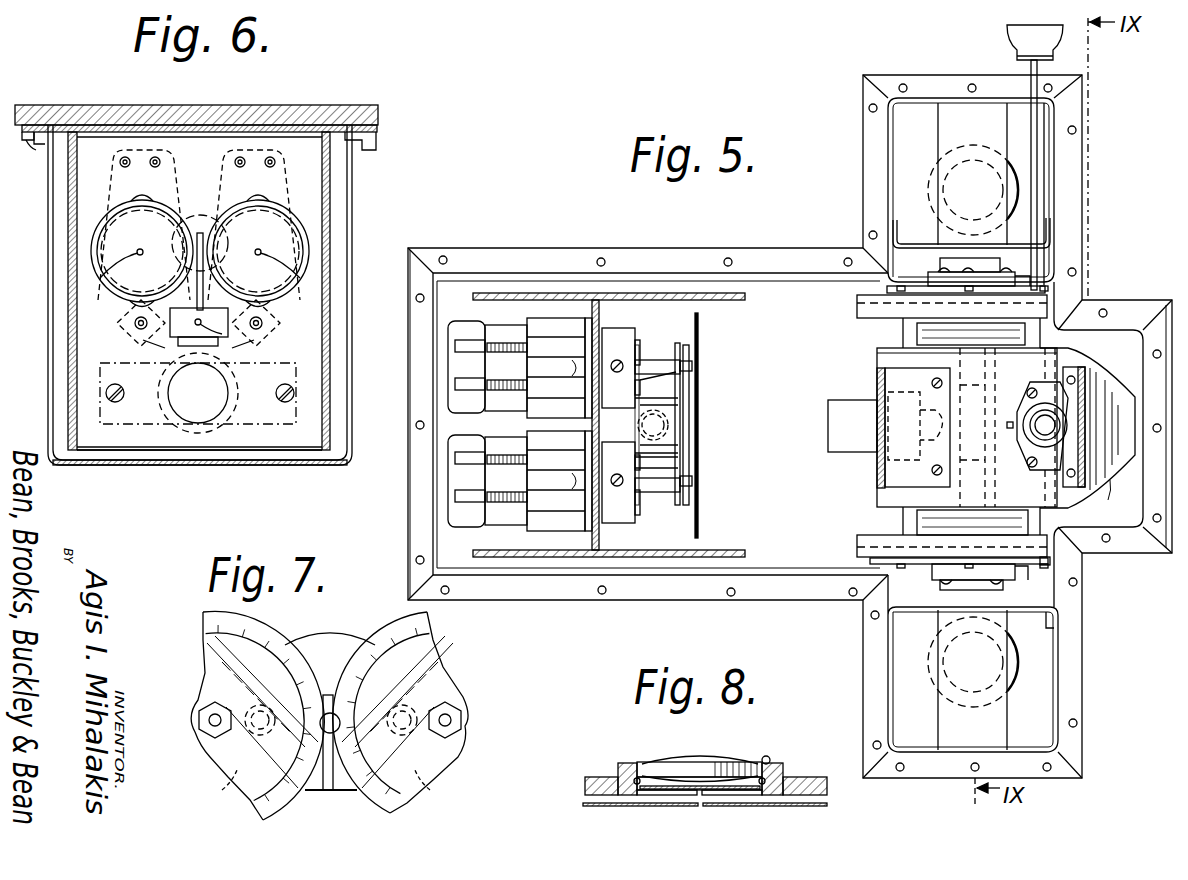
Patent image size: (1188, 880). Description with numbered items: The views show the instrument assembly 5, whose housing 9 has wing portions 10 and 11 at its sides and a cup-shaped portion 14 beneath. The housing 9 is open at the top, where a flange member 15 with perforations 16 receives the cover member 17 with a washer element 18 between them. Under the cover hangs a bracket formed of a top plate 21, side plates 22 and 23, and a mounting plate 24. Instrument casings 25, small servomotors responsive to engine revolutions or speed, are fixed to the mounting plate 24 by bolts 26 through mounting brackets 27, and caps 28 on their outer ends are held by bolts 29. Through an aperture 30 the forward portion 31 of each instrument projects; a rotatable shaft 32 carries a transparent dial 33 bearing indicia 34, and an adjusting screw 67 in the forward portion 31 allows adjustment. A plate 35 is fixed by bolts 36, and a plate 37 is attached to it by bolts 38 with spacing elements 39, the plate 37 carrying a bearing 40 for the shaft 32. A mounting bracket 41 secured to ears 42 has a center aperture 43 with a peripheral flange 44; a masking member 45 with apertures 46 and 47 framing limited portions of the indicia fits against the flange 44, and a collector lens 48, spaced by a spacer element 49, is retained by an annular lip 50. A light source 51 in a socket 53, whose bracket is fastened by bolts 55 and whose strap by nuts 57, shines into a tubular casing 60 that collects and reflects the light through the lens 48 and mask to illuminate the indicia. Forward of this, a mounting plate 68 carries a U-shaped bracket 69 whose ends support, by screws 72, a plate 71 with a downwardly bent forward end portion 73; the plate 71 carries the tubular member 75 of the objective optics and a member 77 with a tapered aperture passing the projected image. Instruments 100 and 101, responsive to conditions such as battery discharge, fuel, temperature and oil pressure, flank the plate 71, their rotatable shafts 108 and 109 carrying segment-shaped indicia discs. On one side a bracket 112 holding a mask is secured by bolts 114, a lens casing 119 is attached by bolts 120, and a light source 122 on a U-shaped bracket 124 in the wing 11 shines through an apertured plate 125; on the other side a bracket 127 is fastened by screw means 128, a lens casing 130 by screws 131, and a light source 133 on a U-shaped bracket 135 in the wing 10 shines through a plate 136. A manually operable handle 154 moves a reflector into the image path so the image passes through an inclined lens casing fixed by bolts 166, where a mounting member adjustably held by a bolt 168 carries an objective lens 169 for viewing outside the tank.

In FIG. 5, the instrument assembly 5 is at (405, 513).
In FIG. 6, the housing 9 is at (50, 432).
In FIG. 5, the winged-shaped portion 10 is at (858, 124).
In FIG. 5, the winged-shaped portion 11 is at (860, 692).
In FIG. 5, the cup-shaped portion 14 is at (1030, 578).
In FIG. 6, the flange member 15 is at (40, 140).
In FIG. 5, the flange member 15 is at (655, 262).
In FIG. 5, the perforations 16 is at (730, 262).
In FIG. 6, the cover member 17 is at (58, 110).
In FIG. 6, the washer element 18 is at (338, 125).
In FIG. 6, the top plate 21 is at (167, 130).
In FIG. 6, the side plate 22 is at (330, 347).
In FIG. 5, the side plate 22 is at (745, 297).
In FIG. 6, the side plate 23 is at (68, 338).
In FIG. 5, the side plate 23 is at (745, 552).
In FIG. 6, the mounting plate 24 is at (124, 452).
In FIG. 5, the mounting plate 24 is at (594, 300).
In FIG. 5, the instrument casing 25 is at (506, 425).
In FIG. 6, the bolts 26 is at (197, 172).
In FIG. 5, the bolts 26 is at (556, 424).
In FIG. 6, the mounting bracket 27 is at (115, 160).
In FIG. 5, the mounting bracket 27 is at (580, 330).
In FIG. 5, the cap 28 is at (466, 424).
In FIG. 5, the bolts 29 is at (505, 392).
In FIG. 5, the aperture 30 is at (592, 407).
In FIG. 5, the forward portion 31 is at (621, 425).
In FIG. 6, the rotatable shaft 32 is at (115, 295).
In FIG. 5, the rotatable shaft 32 is at (696, 360).
In FIG. 6, the transparent dial 33 is at (197, 328).
In FIG. 7, the transparent dial 33 is at (208, 673).
In FIG. 8, the transparent dial 33 is at (606, 807).
In FIG. 5, the transparent dial 33 is at (690, 402).
In FIG. 7, the indicia 34 is at (206, 618).
In FIG. 5, the plate 35 is at (640, 345).
In FIG. 5, the bolts 36 is at (680, 365).
In FIG. 7, the plate 37 is at (445, 796).
In FIG. 5, the plate 37 is at (676, 343).
In FIG. 5, the bolts 38 is at (614, 427).
In FIG. 5, the spacing elements 39 is at (655, 362).
In FIG. 7, the bearing 40 is at (198, 742).
In FIG. 5, the bearing 40 is at (692, 368).
In FIG. 6, the mounting bracket 41 is at (200, 215).
In FIG. 7, the mounting bracket 41 is at (319, 648).
In FIG. 8, the mounting bracket 41 is at (818, 777).
In FIG. 5, the mounting bracket 41 is at (672, 426).
In FIG. 7, the ear 42 is at (331, 722).
In FIG. 8, the center aperture 43 is at (636, 796).
In FIG. 8, the peripheral flange 44 is at (764, 796).
In FIG. 6, the masking member 45 is at (199, 317).
In FIG. 7, the masking member 45 is at (327, 808).
In FIG. 8, the masking member 45 is at (665, 781).
In FIG. 8, the aperture 46 is at (712, 795).
In FIG. 8, the aperture 47 is at (668, 795).
In FIG. 8, the collector lens 48 is at (735, 762).
In FIG. 8, the spacer element 49 is at (626, 770).
In FIG. 8, the annular lip 50 is at (637, 770).
In FIG. 6, the light source 51 is at (226, 383).
In FIG. 6, the socket 53 is at (172, 425).
In FIG. 6, the bolts 55 is at (122, 396).
In FIG. 6, the nuts 57 is at (170, 372).
In FIG. 6, the tubular casing 60 is at (198, 351).
In FIG. 5, the tubular casing 60 is at (640, 426).
In FIG. 5, the adjusting screw 67 is at (618, 425).
In FIG. 5, the mounting plate 68 is at (857, 302).
In FIG. 5, the U-shaped bracket 69 is at (877, 385).
In FIG. 5, the plate 71 is at (1068, 498).
In FIG. 5, the screws 72 is at (930, 472).
In FIG. 5, the forward end portion 73 is at (1112, 495).
In FIG. 5, the tubular member 75 is at (828, 410).
In FIG. 5, the member 77 is at (930, 412).
In FIG. 5, the instrument 100 is at (917, 530).
In FIG. 5, the instrument 101 is at (917, 336).
In FIG. 5, the rotatable shaft 108 is at (972, 523).
In FIG. 5, the rotatable shaft 109 is at (971, 334).
In FIG. 5, the bracket 112 is at (870, 561).
In FIG. 5, the bolts 114 is at (1050, 566).
In FIG. 5, the lens casing 119 is at (947, 590).
In FIG. 5, the bolts 120 is at (940, 580).
In FIG. 5, the light source 122 is at (948, 690).
In FIG. 5, the U-shaped bracket 124 is at (972, 680).
In FIG. 5, the plate 125 is at (1054, 625).
In FIG. 5, the bracket 127 is at (888, 292).
In FIG. 5, the screw means 128 is at (1048, 285).
In FIG. 5, the lens casing 130 is at (945, 262).
In FIG. 5, the screws 131 is at (930, 276).
In FIG. 5, the light source 133 is at (950, 165).
In FIG. 5, the U-shaped bracket 135 is at (991, 194).
In FIG. 5, the plate 136 is at (1048, 225).
In FIG. 5, the manually operable handle 154 is at (1031, 68).
In FIG. 5, the bolts 166 is at (1030, 468).
In FIG. 5, the bolt 168 is at (1010, 428).
In FIG. 5, the objective lens 169 is at (1040, 400).